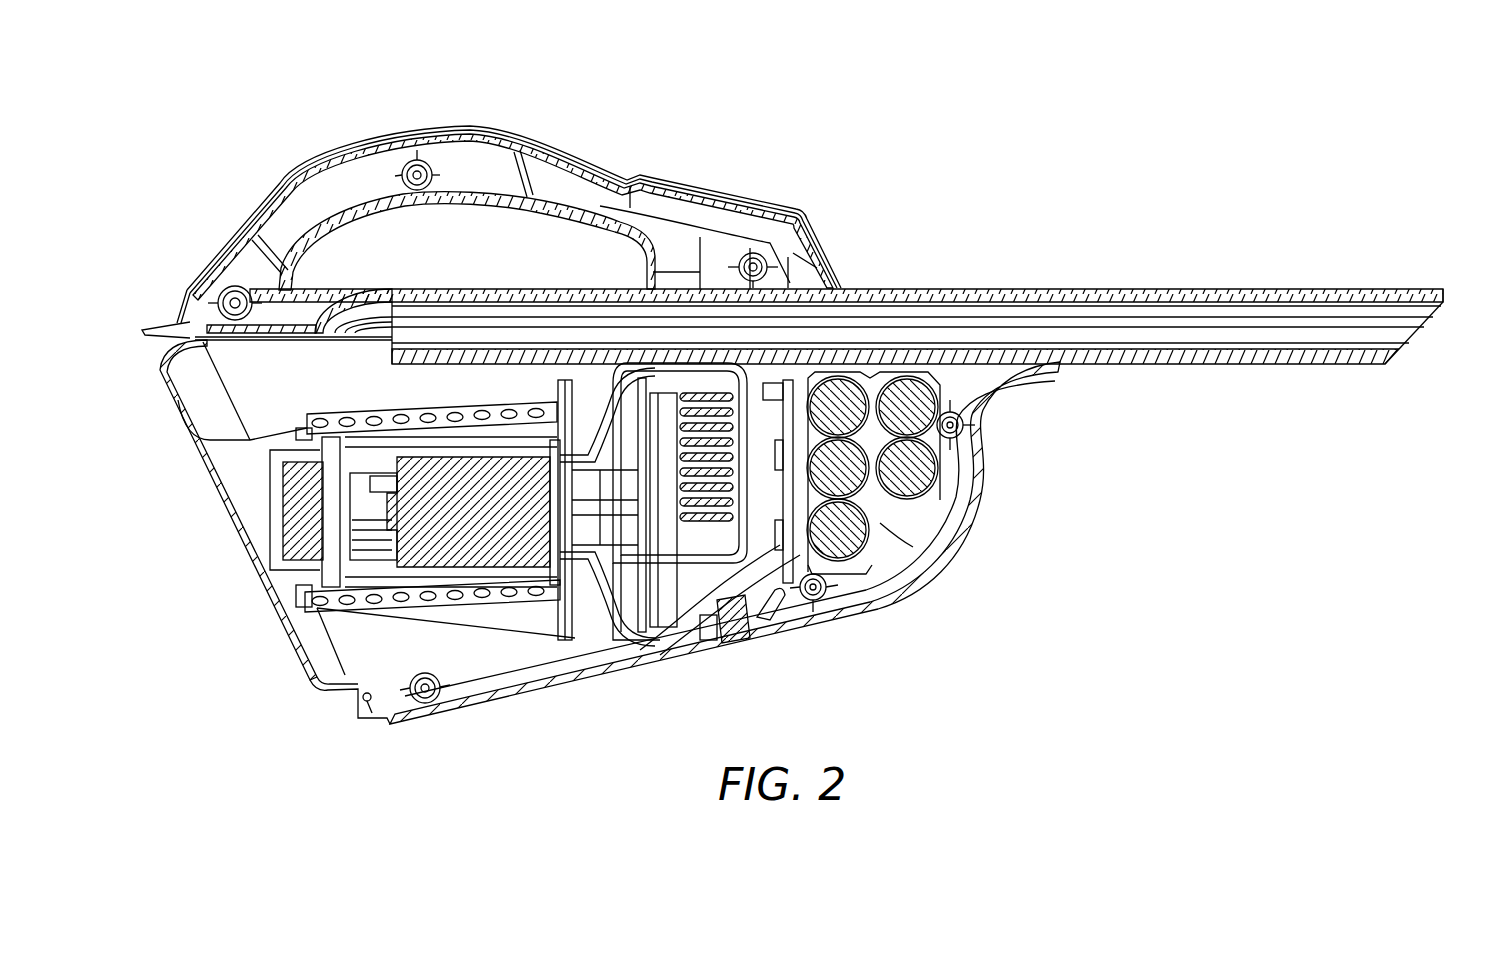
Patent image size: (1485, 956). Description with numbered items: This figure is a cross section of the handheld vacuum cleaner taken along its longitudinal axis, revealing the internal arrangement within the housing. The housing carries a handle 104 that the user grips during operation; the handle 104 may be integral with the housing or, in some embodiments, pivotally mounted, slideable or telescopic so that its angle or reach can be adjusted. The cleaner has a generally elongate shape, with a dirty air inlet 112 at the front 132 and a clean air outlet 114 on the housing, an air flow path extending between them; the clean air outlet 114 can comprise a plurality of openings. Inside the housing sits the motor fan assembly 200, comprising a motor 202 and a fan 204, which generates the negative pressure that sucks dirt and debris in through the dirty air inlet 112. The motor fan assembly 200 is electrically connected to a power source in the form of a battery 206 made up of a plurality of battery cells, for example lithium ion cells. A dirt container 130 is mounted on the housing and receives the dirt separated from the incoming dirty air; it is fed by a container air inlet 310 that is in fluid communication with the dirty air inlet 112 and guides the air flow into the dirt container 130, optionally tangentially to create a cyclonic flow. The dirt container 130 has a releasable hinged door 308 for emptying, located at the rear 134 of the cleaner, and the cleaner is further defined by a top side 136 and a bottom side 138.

The handle 104 is at (471, 127).
The dirty air inlet 112 is at (1414, 340).
The clean air outlet 114 is at (792, 601).
The dirt container 130 is at (354, 643).
The front 132 is at (1412, 250).
The rear 134 is at (205, 557).
The top side 136 is at (280, 124).
The bottom side 138 is at (586, 717).
The motor fan assembly 200 is at (545, 548).
The motor 202 is at (482, 547).
The fan 204 is at (730, 643).
The battery 206 is at (935, 462).
The door 308 is at (172, 397).
The container air inlet 310 is at (358, 331).